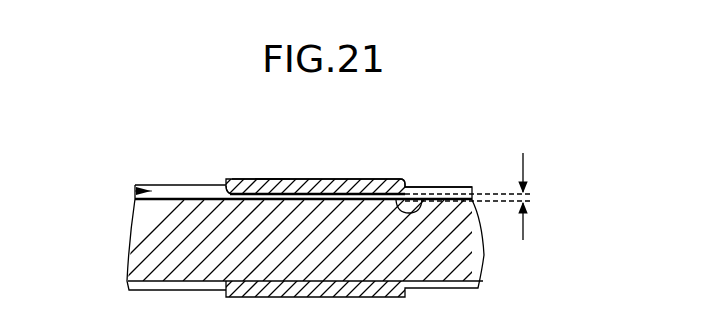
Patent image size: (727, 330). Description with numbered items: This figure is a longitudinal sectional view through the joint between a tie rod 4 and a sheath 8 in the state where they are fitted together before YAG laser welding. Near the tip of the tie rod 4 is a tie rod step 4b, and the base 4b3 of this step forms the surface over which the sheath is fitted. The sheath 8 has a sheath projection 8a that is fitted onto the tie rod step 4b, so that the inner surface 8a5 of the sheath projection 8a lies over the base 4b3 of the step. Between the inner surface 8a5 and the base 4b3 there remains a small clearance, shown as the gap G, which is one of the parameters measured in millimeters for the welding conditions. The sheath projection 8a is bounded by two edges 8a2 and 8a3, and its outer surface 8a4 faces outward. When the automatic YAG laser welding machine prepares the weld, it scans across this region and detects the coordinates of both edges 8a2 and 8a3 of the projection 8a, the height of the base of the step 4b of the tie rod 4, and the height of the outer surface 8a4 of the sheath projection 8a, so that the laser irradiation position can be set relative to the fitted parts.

The tie rod 4 is at (148, 183).
The tie rod step 4b is at (135, 191).
The base of tie rod step 4b3 is at (180, 200).
The sheath 8 is at (368, 176).
The sheath projection 8a is at (318, 176).
The edge of sheath projection 8a2 is at (223, 183).
The edge of sheath projection 8a3 is at (408, 187).
The outer surface of sheath projection 8a4 is at (272, 178).
The inner surface of sheath projection 8a5 is at (390, 219).
The gap G is at (480, 196).